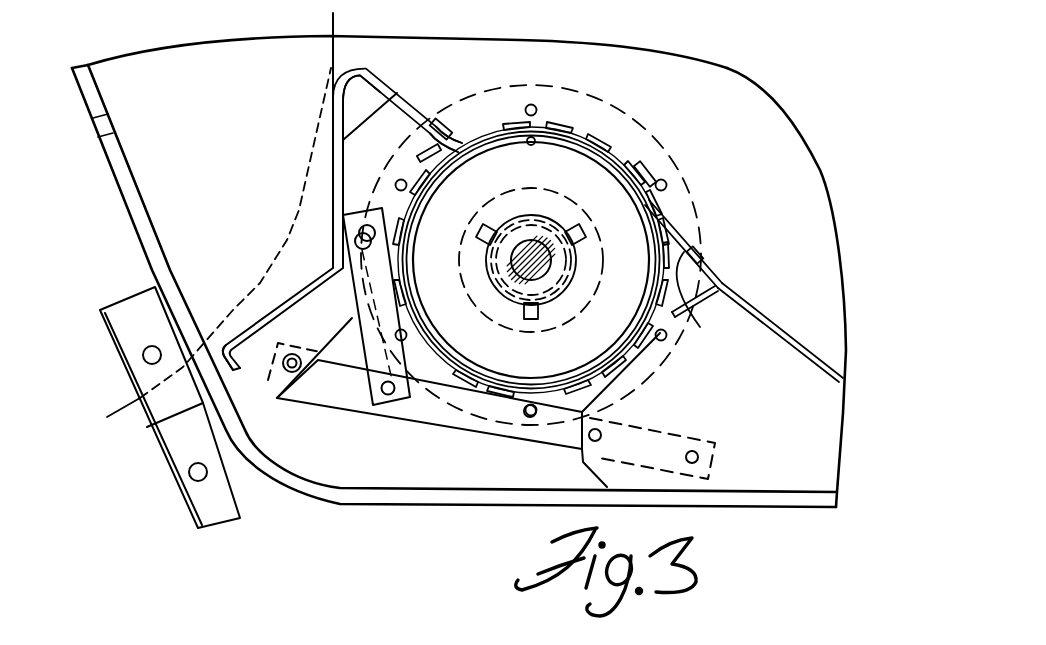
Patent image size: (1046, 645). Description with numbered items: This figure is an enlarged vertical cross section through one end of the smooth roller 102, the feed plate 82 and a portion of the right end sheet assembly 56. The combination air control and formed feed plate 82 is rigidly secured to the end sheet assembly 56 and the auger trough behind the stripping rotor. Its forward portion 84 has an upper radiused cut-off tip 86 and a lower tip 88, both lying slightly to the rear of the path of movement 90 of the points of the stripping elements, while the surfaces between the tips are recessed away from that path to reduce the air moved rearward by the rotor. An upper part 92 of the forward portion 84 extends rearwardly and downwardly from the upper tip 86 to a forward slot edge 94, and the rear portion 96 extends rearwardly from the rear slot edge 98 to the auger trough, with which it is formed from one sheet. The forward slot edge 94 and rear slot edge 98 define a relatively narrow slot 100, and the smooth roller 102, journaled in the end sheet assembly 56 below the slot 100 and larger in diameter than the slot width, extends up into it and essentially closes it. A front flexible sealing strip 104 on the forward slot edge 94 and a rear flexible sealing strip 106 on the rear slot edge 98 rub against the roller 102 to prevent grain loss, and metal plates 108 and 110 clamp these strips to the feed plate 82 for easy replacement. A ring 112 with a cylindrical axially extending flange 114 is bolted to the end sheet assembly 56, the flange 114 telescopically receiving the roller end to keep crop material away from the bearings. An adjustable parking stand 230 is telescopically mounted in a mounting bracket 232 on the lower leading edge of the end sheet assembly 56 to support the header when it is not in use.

The right end sheet assembly 56 is at (363, 507).
The anti-windage feed plate 82 is at (368, 64).
The forward portion 84 is at (335, 131).
The upper tip 86 is at (335, 83).
The lower tip 88 is at (235, 372).
The path of movement 90 is at (330, 60).
The upper part 92 is at (397, 87).
The forward slot edge 94 is at (418, 149).
The rear portion 96 is at (763, 325).
The rear slot edge 98 is at (693, 270).
The slot 100 is at (594, 240).
The smooth roller 102 is at (543, 130).
The front flexible sealing strip 104 is at (448, 139).
The rear flexible sealing strip 106 is at (657, 220).
The metal plate 108 is at (433, 118).
The metal plate 110 is at (710, 267).
The ring 112 is at (640, 115).
The cylindrical axially extending flange 114 is at (640, 173).
The adjustable parking stand 230 is at (190, 508).
The mounting bracket 232 is at (140, 413).